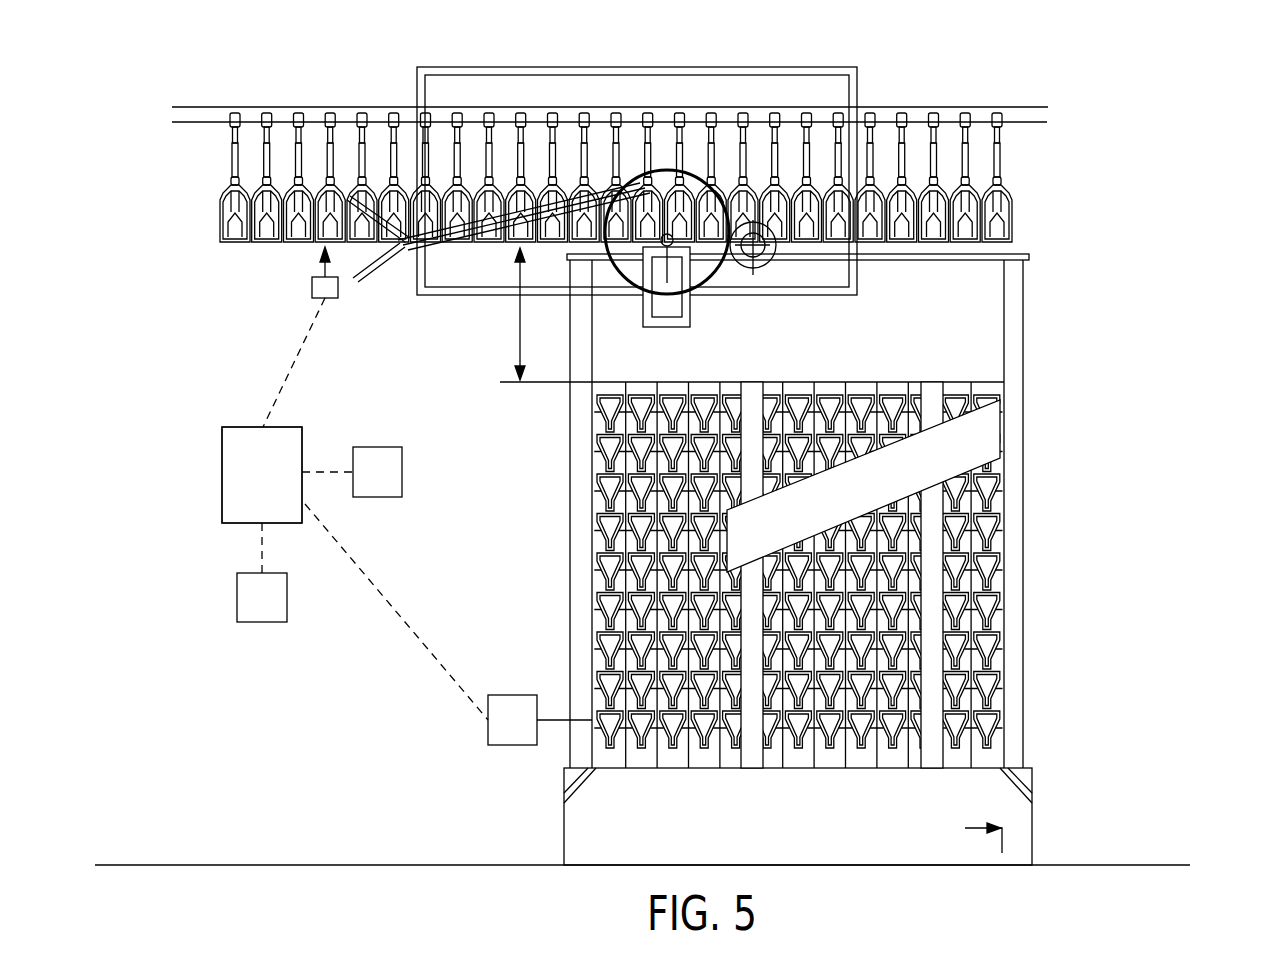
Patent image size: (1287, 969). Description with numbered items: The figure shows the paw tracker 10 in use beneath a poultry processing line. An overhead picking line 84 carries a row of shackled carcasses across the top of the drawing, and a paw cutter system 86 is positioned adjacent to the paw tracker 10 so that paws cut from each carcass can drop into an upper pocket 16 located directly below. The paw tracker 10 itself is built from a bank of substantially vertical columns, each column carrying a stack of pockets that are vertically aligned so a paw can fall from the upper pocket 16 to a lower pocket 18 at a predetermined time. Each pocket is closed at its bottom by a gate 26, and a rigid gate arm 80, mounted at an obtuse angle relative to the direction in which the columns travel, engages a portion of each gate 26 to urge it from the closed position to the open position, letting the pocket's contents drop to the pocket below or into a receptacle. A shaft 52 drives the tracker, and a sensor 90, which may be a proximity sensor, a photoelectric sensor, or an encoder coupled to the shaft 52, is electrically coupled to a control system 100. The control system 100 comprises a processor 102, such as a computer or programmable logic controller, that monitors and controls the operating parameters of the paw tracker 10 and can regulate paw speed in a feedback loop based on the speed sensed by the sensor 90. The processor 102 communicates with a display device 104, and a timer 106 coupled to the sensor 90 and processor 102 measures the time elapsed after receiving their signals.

The paw tracker 10 is at (1128, 360).
The upper pocket 16 is at (670, 404).
The lower pocket 18 is at (667, 740).
The gate 26 is at (683, 409).
The shaft 52 is at (522, 741).
The gate arm 80 is at (935, 467).
The picking line 84 is at (1037, 114).
The paw cutter system 86 is at (593, 262).
The sensor 90 is at (312, 288).
The control system 100 is at (274, 475).
The processor 102 is at (277, 515).
The display device 104 is at (277, 619).
The timer 106 is at (393, 493).